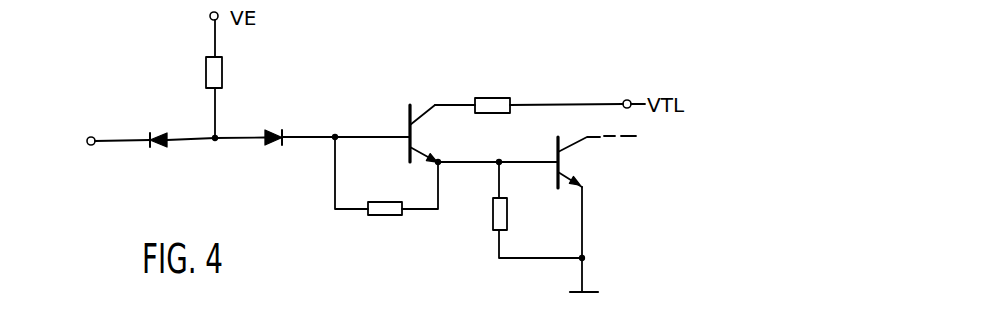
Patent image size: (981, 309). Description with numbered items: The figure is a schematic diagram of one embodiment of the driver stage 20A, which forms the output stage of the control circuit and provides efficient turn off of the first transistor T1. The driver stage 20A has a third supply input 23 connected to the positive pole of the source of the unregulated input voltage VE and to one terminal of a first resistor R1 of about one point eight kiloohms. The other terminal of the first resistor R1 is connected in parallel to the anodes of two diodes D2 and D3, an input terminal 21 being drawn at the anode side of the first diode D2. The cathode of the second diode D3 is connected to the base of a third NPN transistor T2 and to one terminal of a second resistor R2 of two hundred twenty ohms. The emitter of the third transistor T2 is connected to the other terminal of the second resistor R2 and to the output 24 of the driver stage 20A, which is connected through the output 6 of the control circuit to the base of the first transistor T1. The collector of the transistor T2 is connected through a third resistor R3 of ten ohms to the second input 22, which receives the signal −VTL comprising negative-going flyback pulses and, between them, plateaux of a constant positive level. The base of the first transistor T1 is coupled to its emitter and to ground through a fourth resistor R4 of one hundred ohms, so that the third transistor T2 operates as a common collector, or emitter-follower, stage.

The driver stage 20A is at (316, 120).
The input terminal 21 is at (91, 137).
The second input 22 is at (626, 100).
The third supply input 23 is at (210, 17).
The output 24 is at (493, 168).
The output of the control circuit 6 is at (531, 161).
The diode D2 is at (160, 149).
The diode D3 is at (272, 148).
The first resistor R1 is at (225, 84).
The second resistor R2 is at (385, 220).
The third resistor R3 is at (491, 98).
The fourth resistor R4 is at (493, 206).
The first transistor T1 is at (566, 158).
The third NPN transistor T2 is at (408, 122).